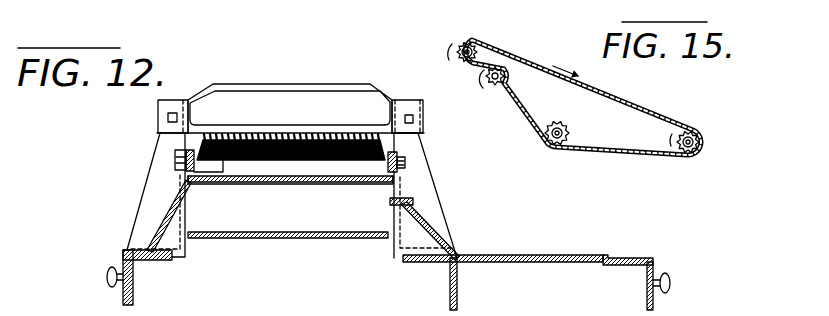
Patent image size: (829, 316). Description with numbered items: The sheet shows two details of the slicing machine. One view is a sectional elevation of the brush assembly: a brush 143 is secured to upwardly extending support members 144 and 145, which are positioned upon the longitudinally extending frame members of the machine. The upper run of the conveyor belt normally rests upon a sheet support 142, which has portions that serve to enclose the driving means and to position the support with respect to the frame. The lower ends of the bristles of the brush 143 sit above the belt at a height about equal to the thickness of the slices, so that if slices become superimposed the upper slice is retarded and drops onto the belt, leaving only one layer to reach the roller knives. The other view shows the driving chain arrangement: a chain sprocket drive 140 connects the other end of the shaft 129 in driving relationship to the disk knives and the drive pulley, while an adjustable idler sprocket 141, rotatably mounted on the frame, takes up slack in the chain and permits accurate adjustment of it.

In FIG. 15, the shaft 129 is at (400, 8).
In FIG. 15, the chain sprocket drive 140 is at (633, 102).
In FIG. 15, the adjustable idler sprocket 141 is at (572, 137).
In FIG. 12, the sheet support 142 is at (270, 185).
In FIG. 12, the brush 143 is at (362, 103).
In FIG. 12, the support member 144 is at (407, 155).
In FIG. 12, the support member 145 is at (160, 172).